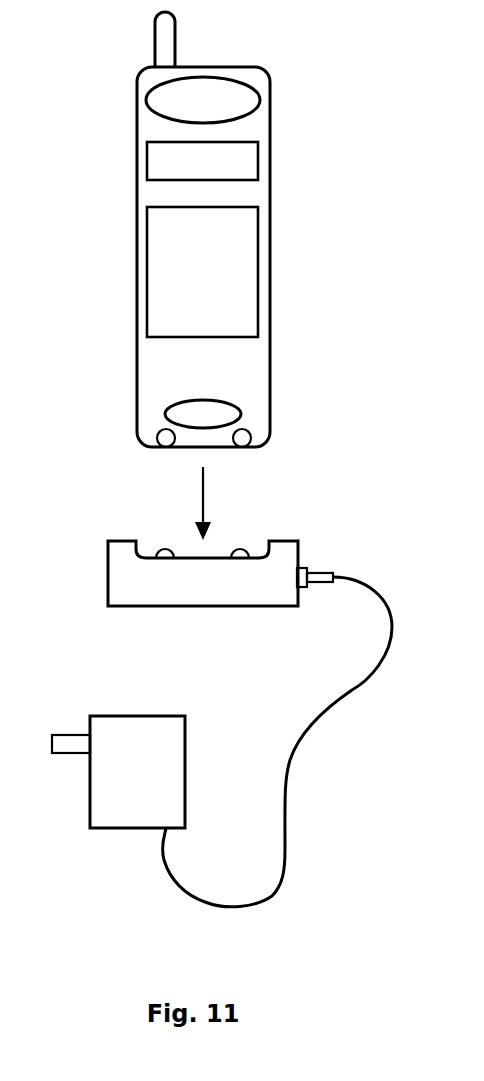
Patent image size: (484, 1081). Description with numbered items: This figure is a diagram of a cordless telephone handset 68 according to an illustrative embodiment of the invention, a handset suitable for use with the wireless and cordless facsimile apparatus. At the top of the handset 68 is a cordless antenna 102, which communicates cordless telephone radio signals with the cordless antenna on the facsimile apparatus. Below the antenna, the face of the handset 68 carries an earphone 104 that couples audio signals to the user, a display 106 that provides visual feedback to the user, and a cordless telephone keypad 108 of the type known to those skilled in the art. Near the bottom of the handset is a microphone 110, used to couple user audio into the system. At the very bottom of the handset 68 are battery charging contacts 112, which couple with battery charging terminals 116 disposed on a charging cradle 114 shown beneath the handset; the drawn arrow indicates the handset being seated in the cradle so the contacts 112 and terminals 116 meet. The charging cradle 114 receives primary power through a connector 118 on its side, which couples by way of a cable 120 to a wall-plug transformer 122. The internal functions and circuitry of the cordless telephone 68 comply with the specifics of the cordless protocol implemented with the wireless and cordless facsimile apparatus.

The cordless telephone handset 68 is at (240, 67).
The cordless antenna 102 is at (155, 44).
The earphone 104 is at (146, 100).
The display 106 is at (147, 170).
The cordless telephone keypad 108 is at (147, 287).
The microphone 110 is at (167, 412).
The battery charging contacts 112 is at (237, 447).
The charging cradle 114 is at (108, 582).
The battery charging terminals 116 is at (238, 550).
The connector 118 is at (310, 568).
The cable 120 is at (289, 793).
The wall-plug transformer 122 is at (100, 828).